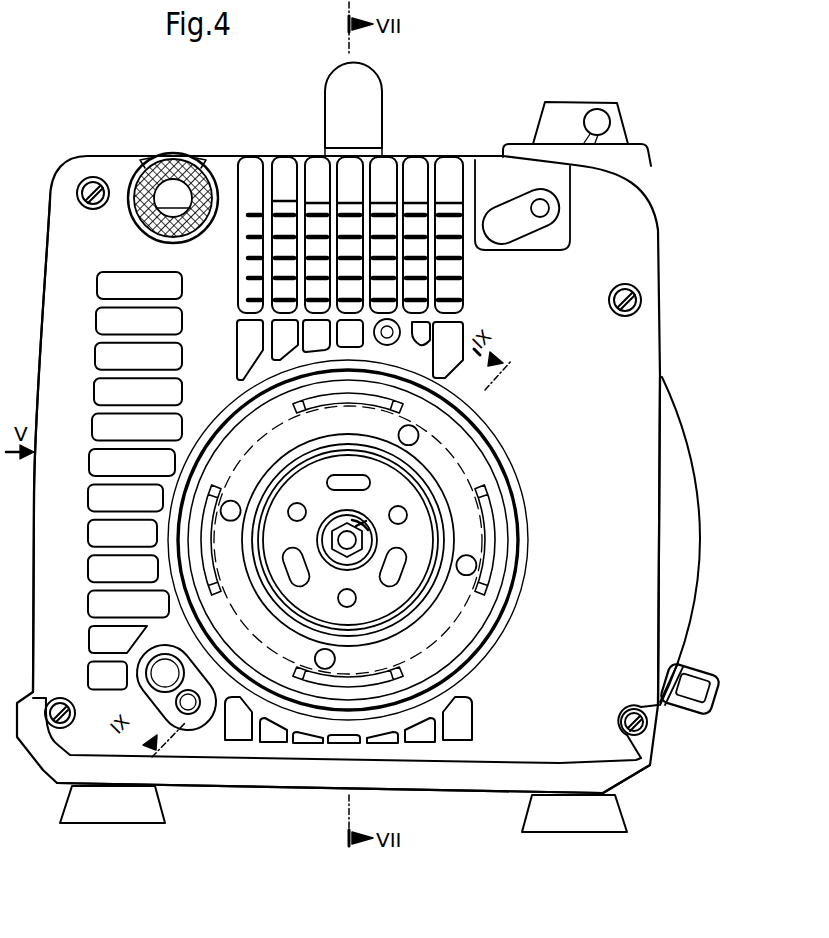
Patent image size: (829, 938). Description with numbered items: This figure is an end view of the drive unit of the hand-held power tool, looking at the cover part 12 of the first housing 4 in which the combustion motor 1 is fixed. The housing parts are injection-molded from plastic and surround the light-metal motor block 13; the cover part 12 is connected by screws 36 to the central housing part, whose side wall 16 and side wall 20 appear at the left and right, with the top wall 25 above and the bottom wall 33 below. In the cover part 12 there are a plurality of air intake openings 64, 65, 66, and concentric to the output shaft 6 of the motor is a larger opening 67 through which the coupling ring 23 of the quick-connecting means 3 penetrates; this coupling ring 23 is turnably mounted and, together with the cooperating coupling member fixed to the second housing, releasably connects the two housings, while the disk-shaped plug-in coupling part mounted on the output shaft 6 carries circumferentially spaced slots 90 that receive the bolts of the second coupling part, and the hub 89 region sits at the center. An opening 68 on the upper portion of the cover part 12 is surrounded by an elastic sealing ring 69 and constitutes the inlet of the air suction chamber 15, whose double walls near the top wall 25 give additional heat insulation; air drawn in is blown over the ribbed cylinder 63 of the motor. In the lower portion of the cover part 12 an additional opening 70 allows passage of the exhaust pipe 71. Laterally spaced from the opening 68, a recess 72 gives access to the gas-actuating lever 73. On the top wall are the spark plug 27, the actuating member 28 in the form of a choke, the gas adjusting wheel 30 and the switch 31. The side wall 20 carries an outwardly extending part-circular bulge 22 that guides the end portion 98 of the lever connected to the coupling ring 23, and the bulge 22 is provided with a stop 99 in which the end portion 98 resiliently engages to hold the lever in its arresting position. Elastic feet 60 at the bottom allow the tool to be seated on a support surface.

The combustion motor 1 is at (495, 748).
The quick-connecting means 3 is at (467, 450).
The first housing 4 is at (52, 536).
The output shaft 6 is at (342, 520).
The cover part 12 is at (70, 210).
The motor block 13 is at (410, 232).
The air suction chamber 15 is at (133, 196).
The side wall 16 is at (40, 306).
The side wall 20 is at (664, 362).
The part-circular bulge 22 is at (683, 458).
The coupling ring 23 is at (482, 475).
The top wall 25 is at (420, 156).
The spark plug 27 is at (372, 98).
The actuating member 28 is at (592, 98).
The gas adjusting wheel 30 is at (548, 118).
The switch 31 is at (600, 122).
The bottom wall 33 is at (360, 790).
The screws 36 is at (89, 178).
The feet 60 is at (107, 812).
The cylinder 63 is at (290, 270).
The air intake opening 64 is at (456, 742).
The air intake opening 65 is at (104, 316).
The air intake opening 66 is at (285, 180).
The larger opening 67 is at (505, 640).
The opening 68 is at (183, 190).
The elastic sealing ring 69 is at (165, 160).
The additional opening 70 is at (176, 686).
The exhaust pipe 71 is at (200, 710).
The recess 72 is at (540, 227).
The gas-actuating lever 73 is at (548, 208).
The hub plate 89 is at (405, 537).
The slots 90 is at (403, 567).
The end portion 98 is at (685, 710).
The stop 99 is at (674, 662).